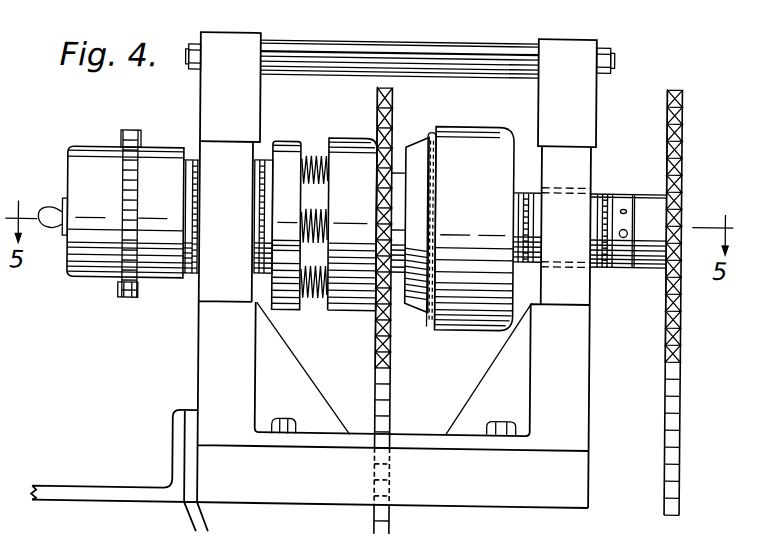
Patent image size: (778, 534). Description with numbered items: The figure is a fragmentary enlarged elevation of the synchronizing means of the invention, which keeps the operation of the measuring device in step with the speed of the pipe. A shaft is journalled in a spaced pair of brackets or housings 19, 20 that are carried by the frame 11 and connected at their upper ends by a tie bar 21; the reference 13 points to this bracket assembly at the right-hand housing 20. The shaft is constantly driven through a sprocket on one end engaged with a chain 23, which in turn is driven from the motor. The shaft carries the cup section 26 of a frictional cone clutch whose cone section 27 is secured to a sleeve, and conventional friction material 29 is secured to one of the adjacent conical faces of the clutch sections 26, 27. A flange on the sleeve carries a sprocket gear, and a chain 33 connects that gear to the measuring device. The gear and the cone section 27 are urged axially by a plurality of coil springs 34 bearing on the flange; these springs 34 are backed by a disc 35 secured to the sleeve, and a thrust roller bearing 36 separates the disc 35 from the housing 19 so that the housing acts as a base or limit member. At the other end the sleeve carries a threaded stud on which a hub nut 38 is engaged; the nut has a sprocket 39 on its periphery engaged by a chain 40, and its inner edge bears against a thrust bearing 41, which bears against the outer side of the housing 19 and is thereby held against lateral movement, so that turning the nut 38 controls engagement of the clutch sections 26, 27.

The frame 11 is at (578, 487).
The bearing support 13 is at (603, 94).
The housing 19 is at (252, 107).
The housing 20 is at (590, 107).
The tie bar 21 is at (357, 41).
The chain 23 is at (680, 497).
The cup section 26 is at (458, 329).
The cone section 27 is at (412, 145).
The friction material 29 is at (433, 130).
The chain 33 is at (388, 392).
The coil springs 34 is at (310, 306).
The disc 35 is at (290, 304).
The thrust roller bearing 36 is at (262, 275).
The hub nut 38 is at (148, 282).
The sprocket 39 is at (122, 197).
The chain 40 is at (117, 302).
The thrust bearing 41 is at (187, 281).